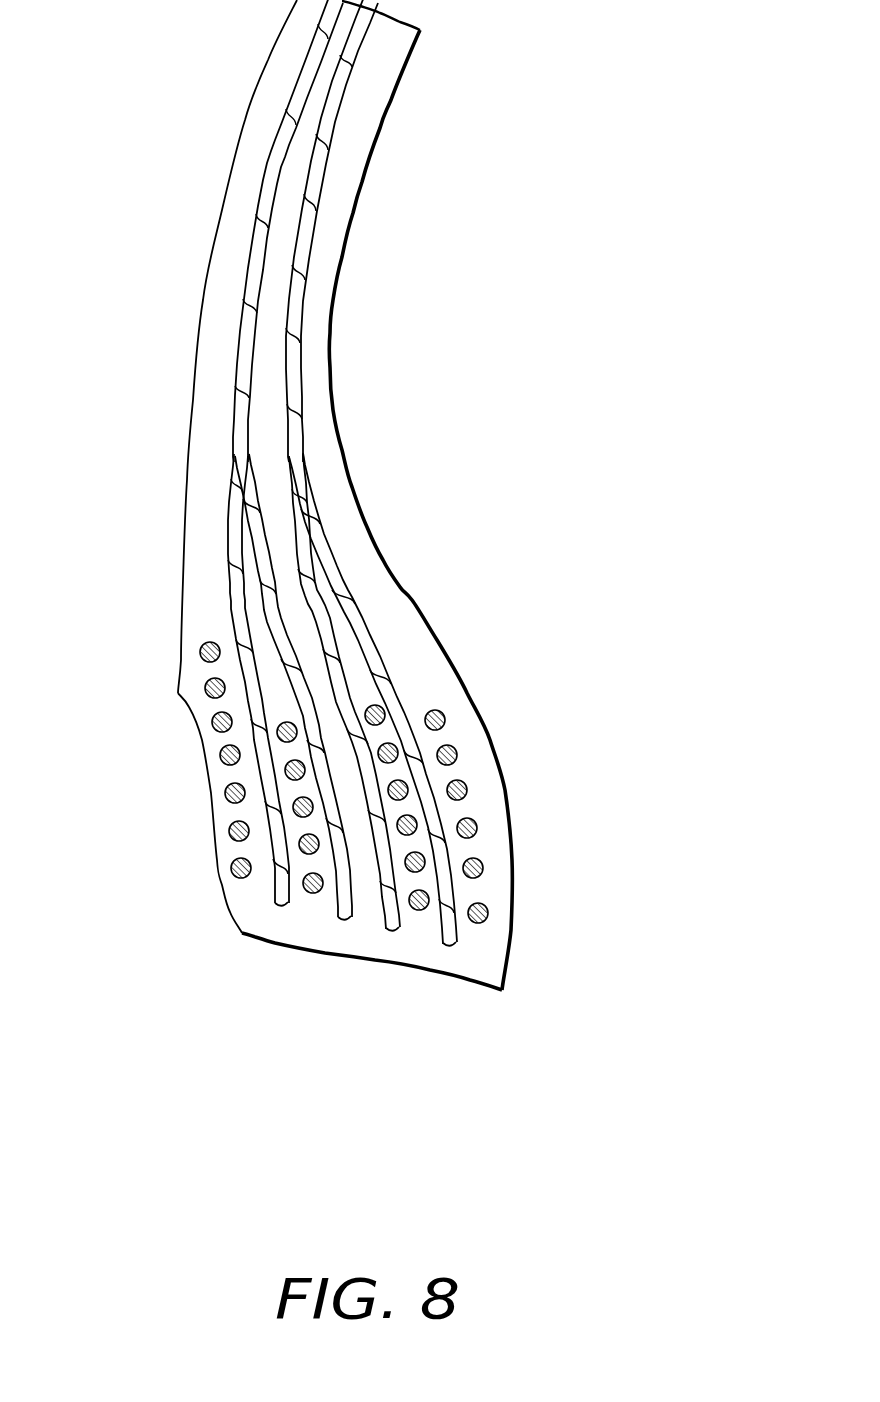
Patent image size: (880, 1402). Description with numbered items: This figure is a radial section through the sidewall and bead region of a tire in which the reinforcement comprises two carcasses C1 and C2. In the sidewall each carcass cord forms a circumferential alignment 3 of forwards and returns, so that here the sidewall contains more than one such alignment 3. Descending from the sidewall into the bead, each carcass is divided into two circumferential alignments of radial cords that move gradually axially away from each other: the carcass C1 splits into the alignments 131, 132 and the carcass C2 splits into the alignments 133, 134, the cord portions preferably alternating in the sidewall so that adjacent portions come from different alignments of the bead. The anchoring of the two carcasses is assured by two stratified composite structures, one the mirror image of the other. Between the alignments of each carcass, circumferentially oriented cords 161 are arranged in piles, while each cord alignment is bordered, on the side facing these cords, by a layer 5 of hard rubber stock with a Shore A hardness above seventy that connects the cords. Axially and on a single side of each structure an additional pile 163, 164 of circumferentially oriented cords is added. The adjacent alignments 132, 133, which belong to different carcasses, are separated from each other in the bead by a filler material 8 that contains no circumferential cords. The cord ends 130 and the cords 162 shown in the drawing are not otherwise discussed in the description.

The circumferential alignment 3 is at (301, 231).
The carcass C1 is at (328, 180).
The carcass C2 is at (267, 182).
The layer of rubber stock 5 is at (258, 865).
The filler material 8 is at (368, 883).
The strand end 130 is at (283, 917).
The circumferential alignment of radial cords 131 is at (358, 585).
The circumferential alignment of radial cords 132 is at (332, 657).
The circumferential alignment of radial cords 133 is at (272, 593).
The circumferential alignment of radial cords 134 is at (245, 662).
The circumferentially oriented cords 161 is at (415, 828).
The optical fiber 162 is at (295, 807).
The pile of circumferentially oriented cords 163 is at (480, 870).
The pile of circumferentially oriented cords 164 is at (220, 757).